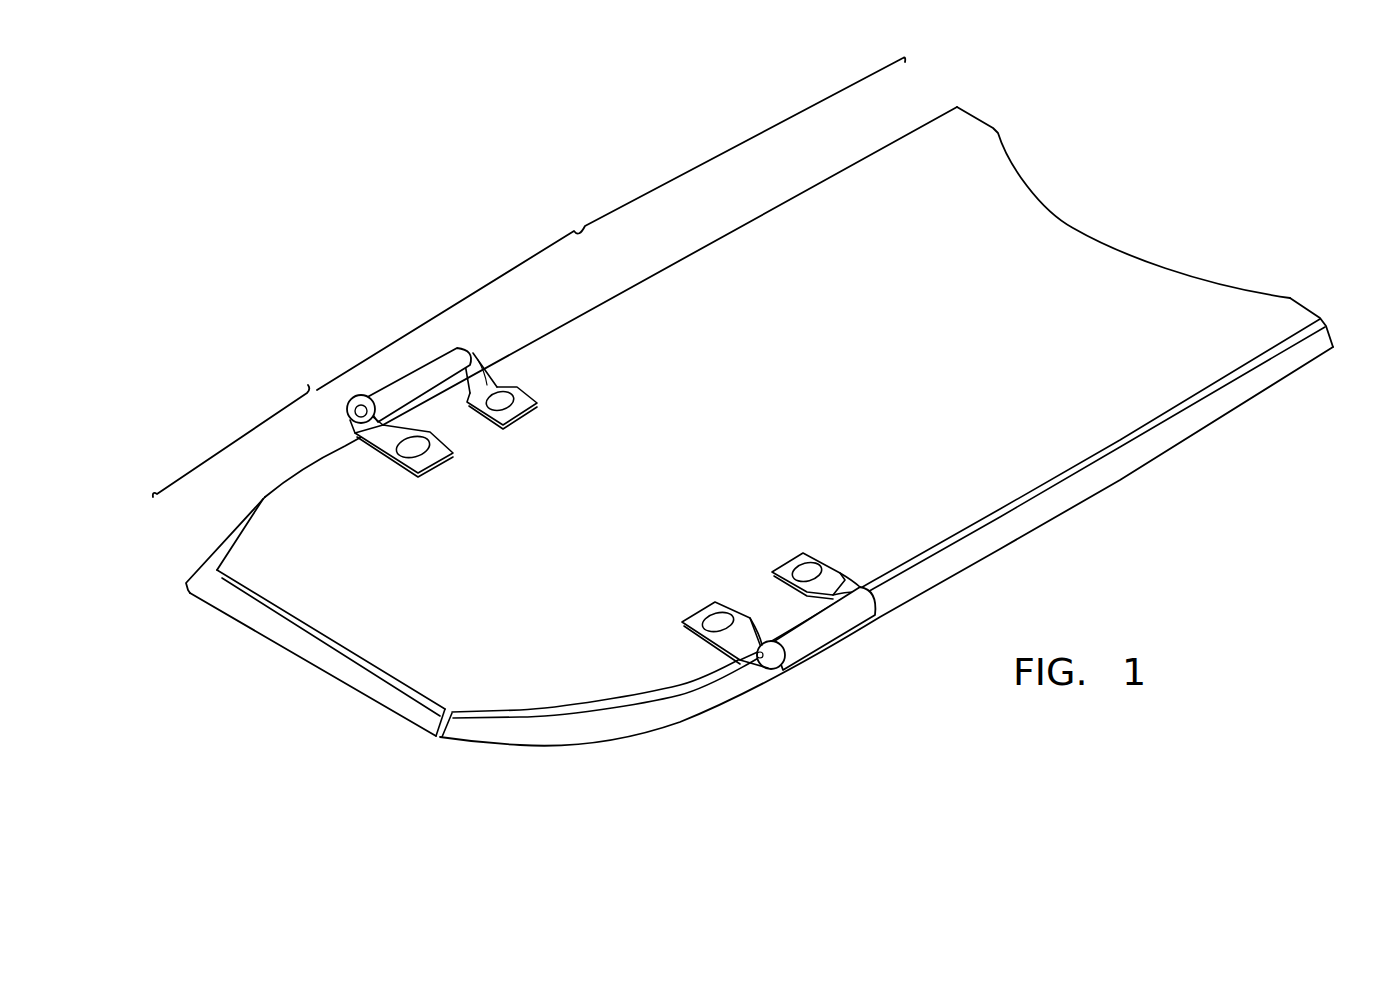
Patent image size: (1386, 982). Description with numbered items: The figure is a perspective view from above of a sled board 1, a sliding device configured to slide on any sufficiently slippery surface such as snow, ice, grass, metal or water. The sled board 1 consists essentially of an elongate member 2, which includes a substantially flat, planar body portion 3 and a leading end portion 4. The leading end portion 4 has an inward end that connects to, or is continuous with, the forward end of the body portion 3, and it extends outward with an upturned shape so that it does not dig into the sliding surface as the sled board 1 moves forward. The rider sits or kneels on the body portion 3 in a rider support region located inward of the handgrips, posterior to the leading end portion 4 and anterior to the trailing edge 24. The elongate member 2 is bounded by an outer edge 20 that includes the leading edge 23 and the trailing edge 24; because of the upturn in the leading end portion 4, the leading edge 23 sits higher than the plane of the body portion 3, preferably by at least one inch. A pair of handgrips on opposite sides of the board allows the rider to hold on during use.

The sled board 1 is at (410, 163).
The elongate member 2 is at (957, 457).
The body portion 3 is at (585, 226).
The leading end portion 4 is at (228, 445).
The outer edge 20 is at (412, 710).
The leading edge 23 is at (298, 664).
The trailing edge 24 is at (982, 118).